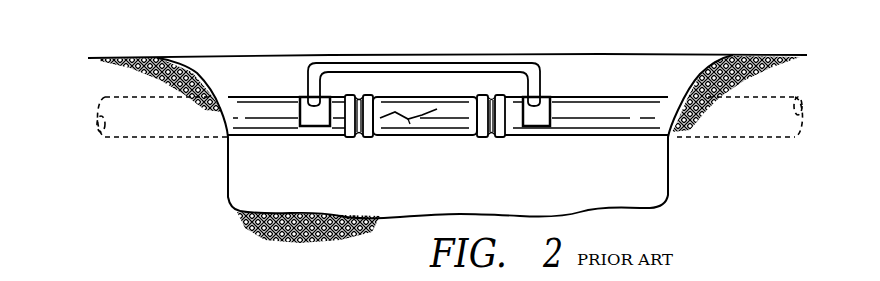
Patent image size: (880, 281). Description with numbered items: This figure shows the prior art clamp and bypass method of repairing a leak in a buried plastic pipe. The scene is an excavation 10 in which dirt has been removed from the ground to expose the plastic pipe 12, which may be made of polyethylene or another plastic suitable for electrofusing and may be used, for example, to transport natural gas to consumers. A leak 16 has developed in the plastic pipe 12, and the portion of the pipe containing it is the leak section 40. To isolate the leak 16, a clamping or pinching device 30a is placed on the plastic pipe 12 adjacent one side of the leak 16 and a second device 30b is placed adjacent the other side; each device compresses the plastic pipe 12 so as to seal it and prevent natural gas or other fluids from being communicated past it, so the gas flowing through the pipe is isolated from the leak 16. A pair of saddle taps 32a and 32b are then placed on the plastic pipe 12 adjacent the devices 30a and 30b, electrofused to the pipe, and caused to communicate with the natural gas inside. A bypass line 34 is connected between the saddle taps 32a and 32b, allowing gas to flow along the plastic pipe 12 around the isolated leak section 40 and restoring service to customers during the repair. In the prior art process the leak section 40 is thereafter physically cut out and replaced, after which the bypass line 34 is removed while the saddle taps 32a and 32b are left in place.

The excavation 10 is at (688, 78).
The plastic pipe 12 is at (583, 137).
The leak 16 is at (412, 136).
The leak section 40 is at (441, 124).
The device 30a is at (358, 137).
The device 30b is at (491, 137).
The saddle tap 32a is at (300, 107).
The saddle tap 32b is at (550, 107).
The bypass line 34 is at (427, 62).